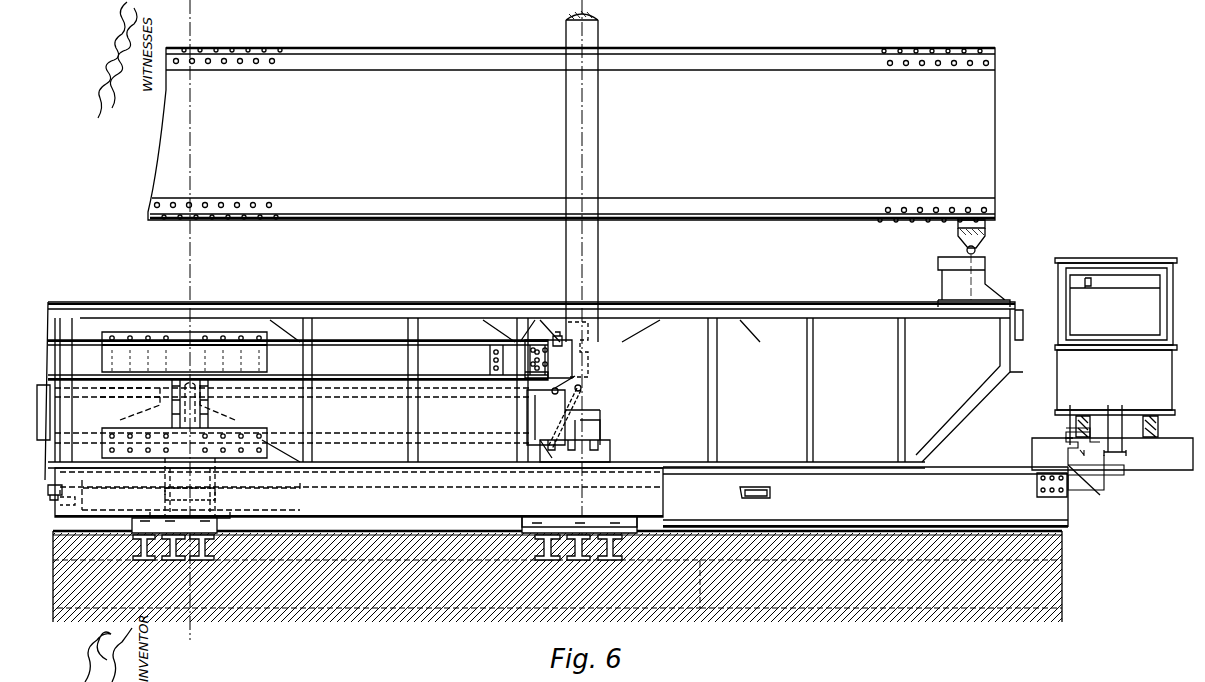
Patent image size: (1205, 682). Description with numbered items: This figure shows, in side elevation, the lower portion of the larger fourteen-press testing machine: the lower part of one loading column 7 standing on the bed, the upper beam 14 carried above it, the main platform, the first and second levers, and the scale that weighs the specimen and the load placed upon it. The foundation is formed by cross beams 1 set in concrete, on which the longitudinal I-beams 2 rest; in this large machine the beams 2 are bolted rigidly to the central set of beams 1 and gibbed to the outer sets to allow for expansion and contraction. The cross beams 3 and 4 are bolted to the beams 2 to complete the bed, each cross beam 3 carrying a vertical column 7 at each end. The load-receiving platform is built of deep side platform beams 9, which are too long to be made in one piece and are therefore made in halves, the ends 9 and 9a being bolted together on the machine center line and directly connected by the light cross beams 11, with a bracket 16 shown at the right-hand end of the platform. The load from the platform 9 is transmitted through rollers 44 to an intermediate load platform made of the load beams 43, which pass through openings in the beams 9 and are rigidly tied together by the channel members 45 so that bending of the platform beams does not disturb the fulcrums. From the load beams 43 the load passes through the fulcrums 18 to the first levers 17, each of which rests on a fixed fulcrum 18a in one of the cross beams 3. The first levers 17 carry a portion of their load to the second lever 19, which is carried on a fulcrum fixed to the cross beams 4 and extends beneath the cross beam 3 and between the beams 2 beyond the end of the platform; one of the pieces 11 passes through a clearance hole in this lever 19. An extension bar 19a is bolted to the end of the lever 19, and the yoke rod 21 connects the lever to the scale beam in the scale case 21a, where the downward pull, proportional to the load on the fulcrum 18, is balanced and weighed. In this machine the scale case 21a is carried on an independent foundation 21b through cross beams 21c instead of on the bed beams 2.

The cross beams 1 is at (540, 542).
The longitudinal I-beams 2 is at (359, 492).
The cross beams 3 is at (575, 441).
The cross beams 4 is at (165, 494).
The vertical column 7 is at (566, 157).
The platform beams 9 is at (530, 391).
The platform beam half 9a is at (145, 414).
The light cross beams 11 is at (770, 496).
The girder 14 is at (571, 135).
The bracket 16 is at (1023, 340).
The first levers 17 is at (563, 417).
The fulcrums 18 is at (554, 390).
The fulcrum 18a is at (582, 389).
The second lever 19 is at (865, 497).
The extension bar 19a is at (1100, 465).
The yoke rod 21 is at (1068, 440).
The scale case 21a is at (1116, 336).
The independent foundation 21b is at (1180, 470).
The cross beams 21c is at (1182, 420).
The load beams 43 is at (548, 366).
The rollers 44 is at (557, 336).
The channel members 45 is at (298, 391).